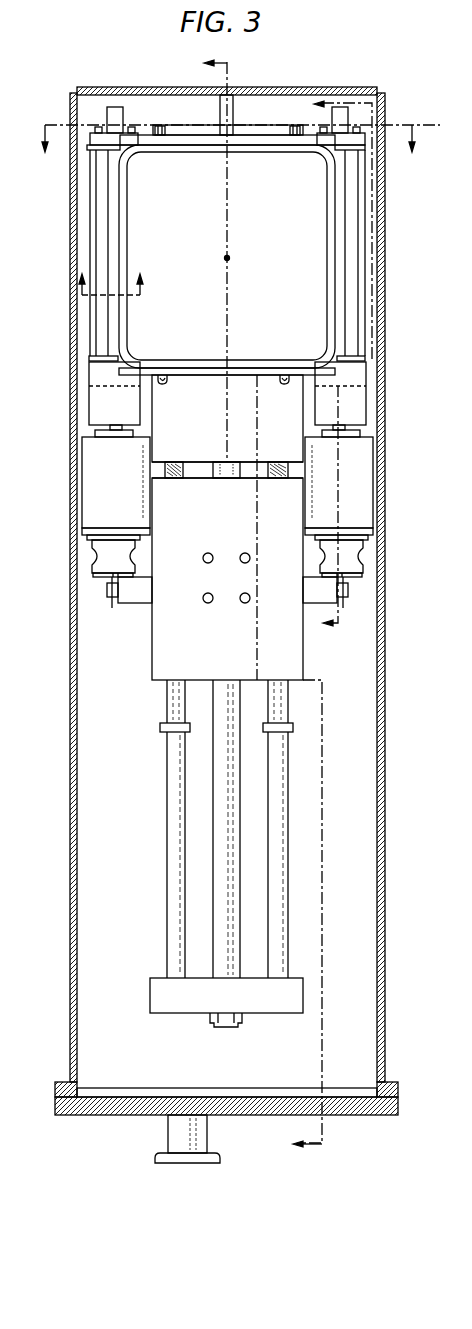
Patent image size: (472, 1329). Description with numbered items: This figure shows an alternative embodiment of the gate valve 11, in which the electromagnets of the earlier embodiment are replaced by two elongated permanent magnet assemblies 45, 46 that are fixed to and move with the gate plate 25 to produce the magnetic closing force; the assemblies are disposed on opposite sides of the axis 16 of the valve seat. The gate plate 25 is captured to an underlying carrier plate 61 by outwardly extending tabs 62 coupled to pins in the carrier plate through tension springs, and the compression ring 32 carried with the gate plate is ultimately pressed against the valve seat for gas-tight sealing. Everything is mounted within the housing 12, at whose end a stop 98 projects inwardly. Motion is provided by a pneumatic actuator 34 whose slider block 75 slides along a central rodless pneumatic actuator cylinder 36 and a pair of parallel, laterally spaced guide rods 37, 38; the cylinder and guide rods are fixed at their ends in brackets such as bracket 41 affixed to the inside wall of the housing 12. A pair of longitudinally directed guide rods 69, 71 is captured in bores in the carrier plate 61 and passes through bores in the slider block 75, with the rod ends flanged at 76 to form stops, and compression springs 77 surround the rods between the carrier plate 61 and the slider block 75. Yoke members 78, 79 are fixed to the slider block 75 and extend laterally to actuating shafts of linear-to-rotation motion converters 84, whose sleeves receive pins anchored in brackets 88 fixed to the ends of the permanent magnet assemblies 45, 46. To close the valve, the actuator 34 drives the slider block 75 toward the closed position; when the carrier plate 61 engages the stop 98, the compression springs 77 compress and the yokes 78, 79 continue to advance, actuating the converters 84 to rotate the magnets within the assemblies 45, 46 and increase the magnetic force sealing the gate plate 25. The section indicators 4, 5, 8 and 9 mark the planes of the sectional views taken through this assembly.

The gate valve 11 is at (60, 549).
The housing 12 is at (330, 87).
The axis of the valve seat 16 is at (227, 257).
The gate plate 25 is at (274, 314).
The compression ring 32 is at (331, 240).
The pneumatic actuator 34 is at (144, 651).
The pneumatic actuator cylinder 36 is at (220, 912).
The guide rod 37 is at (166, 870).
The guide rod 38 is at (283, 888).
The bracket 41 is at (168, 1013).
The permanent magnet assembly 45 is at (100, 229).
The permanent magnet assembly 46 is at (355, 250).
The carrier plate 61 is at (196, 132).
The tabs 62 is at (155, 127).
The guide rod 69 is at (282, 703).
The guide rod 71 is at (168, 700).
The slider block 75 is at (195, 549).
The flange 76 is at (160, 732).
The compression springs 77 is at (185, 478).
The yoke member 78 is at (308, 594).
The yoke member 79 is at (135, 603).
The linear-to-rotation motion converters 84 is at (95, 489).
The brackets 88 is at (98, 393).
The stop 98 is at (235, 107).
The section line 4- 4 is at (256, 603).
The section line 5- 5 is at (239, 150).
The section line 8- 8 is at (110, 272).
The section line 9- 9 is at (334, 366).